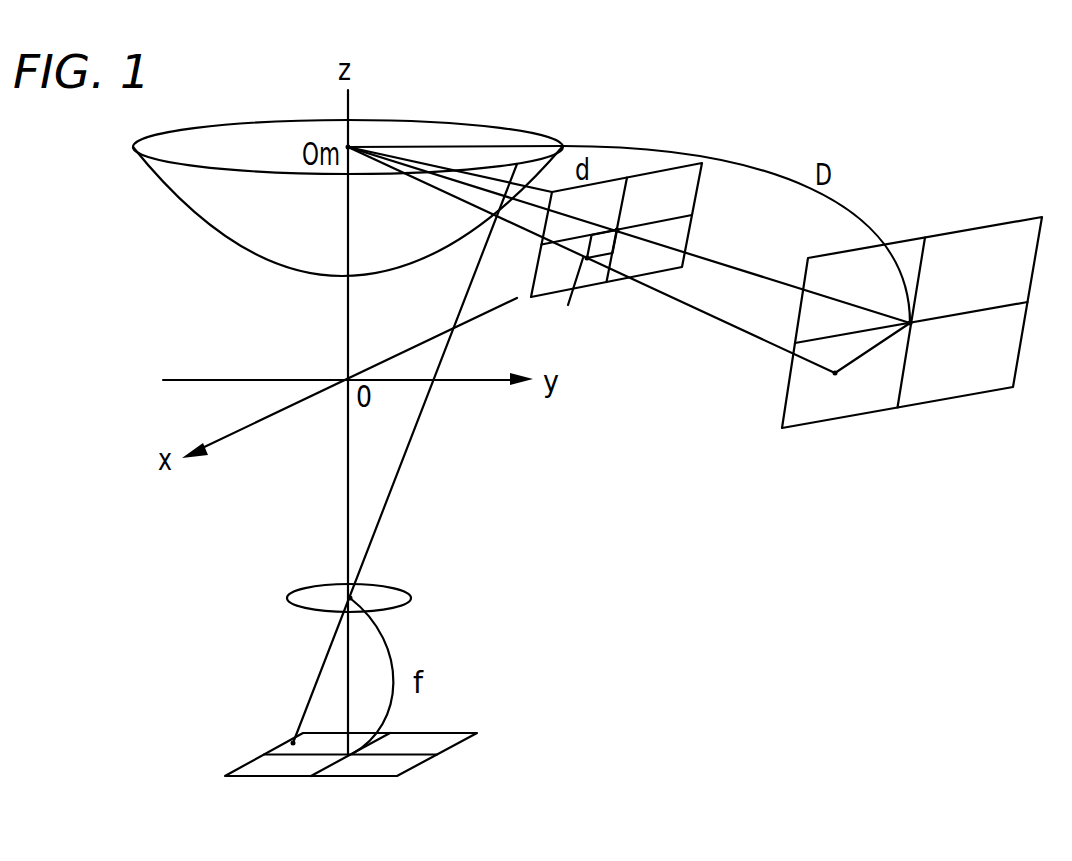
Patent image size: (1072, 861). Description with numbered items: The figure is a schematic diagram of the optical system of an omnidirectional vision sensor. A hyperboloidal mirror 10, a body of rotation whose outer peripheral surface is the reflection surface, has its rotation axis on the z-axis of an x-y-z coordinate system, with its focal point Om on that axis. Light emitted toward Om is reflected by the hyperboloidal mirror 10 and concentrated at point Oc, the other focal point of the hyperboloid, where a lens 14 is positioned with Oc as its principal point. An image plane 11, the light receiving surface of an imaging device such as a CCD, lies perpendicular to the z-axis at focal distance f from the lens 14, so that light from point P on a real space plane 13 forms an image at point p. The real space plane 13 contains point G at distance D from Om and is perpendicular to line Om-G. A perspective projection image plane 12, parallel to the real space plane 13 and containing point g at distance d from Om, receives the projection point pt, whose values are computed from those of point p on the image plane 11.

The hyperboloidal mirror 10 is at (458, 142).
The image plane 11 is at (447, 740).
The perspective projection image plane 12 is at (683, 175).
The real space plane 13 is at (789, 425).
The lens 14 is at (410, 598).